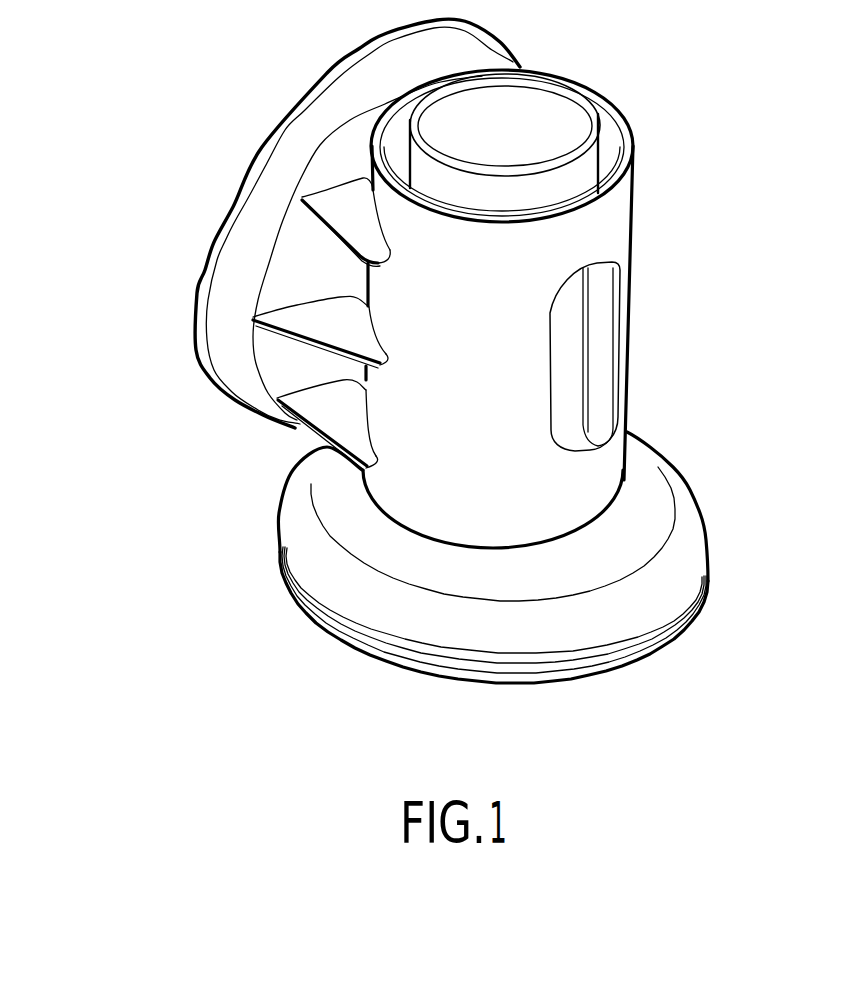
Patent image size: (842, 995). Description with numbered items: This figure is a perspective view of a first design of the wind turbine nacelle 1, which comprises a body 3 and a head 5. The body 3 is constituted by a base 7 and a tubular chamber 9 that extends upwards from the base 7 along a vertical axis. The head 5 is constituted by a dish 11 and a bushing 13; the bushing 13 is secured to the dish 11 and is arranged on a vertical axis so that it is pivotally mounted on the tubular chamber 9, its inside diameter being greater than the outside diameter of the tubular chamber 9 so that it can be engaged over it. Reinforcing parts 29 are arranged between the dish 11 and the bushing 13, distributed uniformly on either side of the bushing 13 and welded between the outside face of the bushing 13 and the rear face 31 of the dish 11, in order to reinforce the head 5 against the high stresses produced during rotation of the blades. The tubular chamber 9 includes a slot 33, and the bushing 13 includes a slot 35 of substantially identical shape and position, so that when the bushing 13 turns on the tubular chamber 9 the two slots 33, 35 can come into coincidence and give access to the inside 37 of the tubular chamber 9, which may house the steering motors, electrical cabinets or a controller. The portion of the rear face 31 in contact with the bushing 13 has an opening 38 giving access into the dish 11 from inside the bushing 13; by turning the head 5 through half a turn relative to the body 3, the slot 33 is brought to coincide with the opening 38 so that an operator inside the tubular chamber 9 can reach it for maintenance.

The wind turbine nacelle 1 is at (382, 351).
The body 3 is at (287, 597).
The head 5 is at (224, 208).
The base 7 is at (683, 491).
The tubular chamber 9 is at (590, 168).
The dish 11 is at (287, 164).
The bushing 13 is at (636, 196).
The reinforcing parts 29 is at (326, 333).
The rear face 31 is at (283, 276).
The slot 33 is at (586, 346).
The slot 35 is at (548, 383).
The inside 37 is at (521, 122).
The opening 38 is at (394, 162).